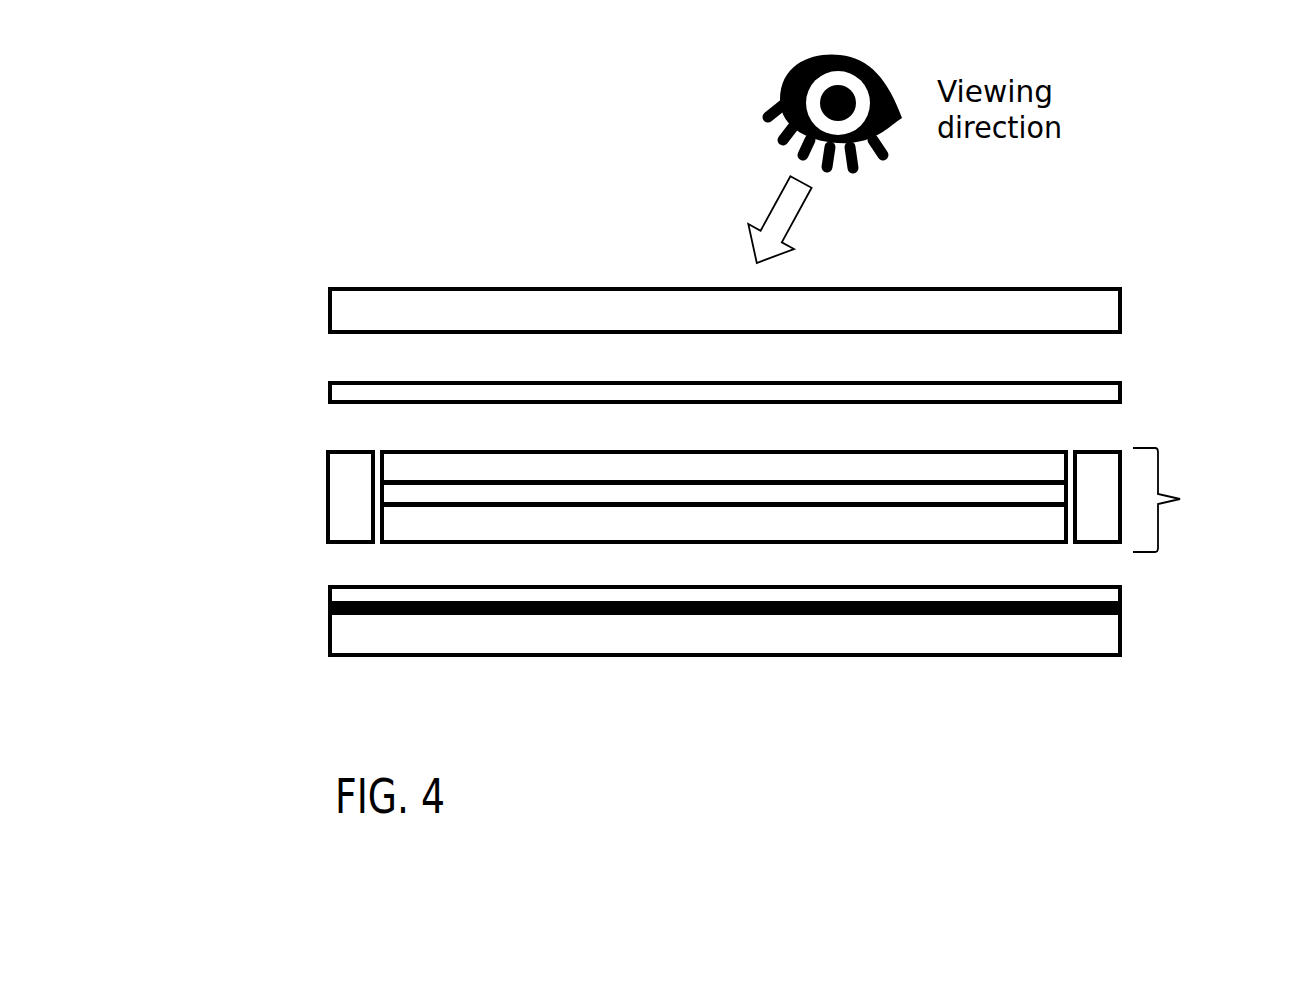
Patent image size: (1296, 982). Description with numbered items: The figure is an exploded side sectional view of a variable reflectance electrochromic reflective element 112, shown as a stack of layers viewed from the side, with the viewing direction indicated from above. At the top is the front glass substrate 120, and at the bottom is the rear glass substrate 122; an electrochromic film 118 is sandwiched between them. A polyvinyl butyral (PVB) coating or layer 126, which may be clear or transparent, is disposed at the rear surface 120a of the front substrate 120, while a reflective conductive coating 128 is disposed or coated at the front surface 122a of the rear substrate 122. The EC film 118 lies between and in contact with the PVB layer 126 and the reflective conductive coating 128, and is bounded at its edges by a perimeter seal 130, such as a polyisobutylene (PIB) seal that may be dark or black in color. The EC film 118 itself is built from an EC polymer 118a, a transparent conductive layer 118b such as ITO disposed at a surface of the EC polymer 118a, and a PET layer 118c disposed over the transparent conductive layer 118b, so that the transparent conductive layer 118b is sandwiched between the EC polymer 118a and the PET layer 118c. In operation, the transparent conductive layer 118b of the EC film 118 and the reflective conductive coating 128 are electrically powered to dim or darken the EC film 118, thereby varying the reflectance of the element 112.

The variable reflectance electrochromic reflective element 112 is at (1163, 185).
The electrochromic film 118 is at (826, 496).
The EC polymer 118a is at (950, 533).
The transparent conductive layer 118b is at (972, 498).
The PET layer 118c is at (1060, 463).
The front glass substrate 120 is at (552, 308).
The rear surface of the front substrate 120a is at (637, 330).
The rear glass substrate 122 is at (882, 645).
The front surface of the rear substrate 122a is at (1000, 613).
The polyvinyl butyral (PVB) layer 126 is at (348, 391).
The reflective conductive coating 128 is at (350, 597).
The perimeter seal 130 is at (352, 473).